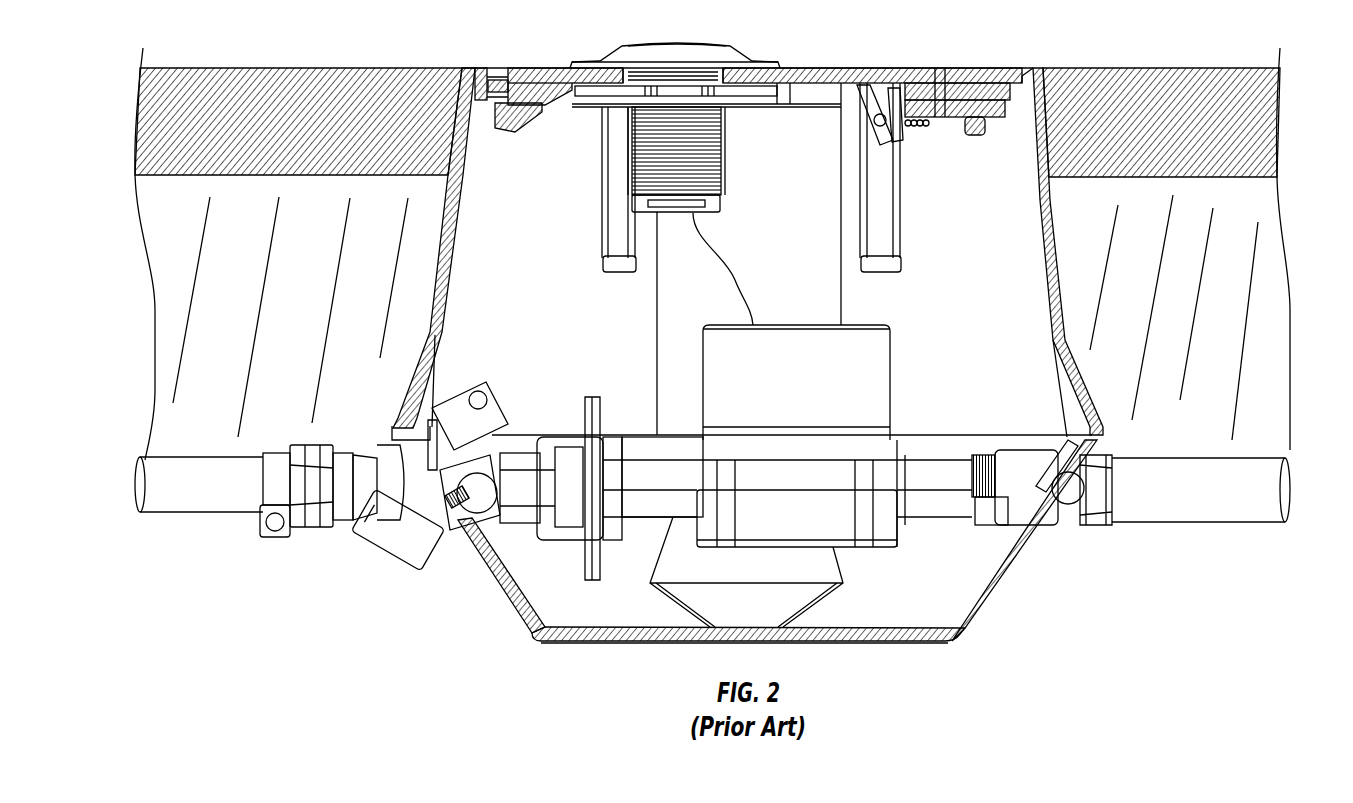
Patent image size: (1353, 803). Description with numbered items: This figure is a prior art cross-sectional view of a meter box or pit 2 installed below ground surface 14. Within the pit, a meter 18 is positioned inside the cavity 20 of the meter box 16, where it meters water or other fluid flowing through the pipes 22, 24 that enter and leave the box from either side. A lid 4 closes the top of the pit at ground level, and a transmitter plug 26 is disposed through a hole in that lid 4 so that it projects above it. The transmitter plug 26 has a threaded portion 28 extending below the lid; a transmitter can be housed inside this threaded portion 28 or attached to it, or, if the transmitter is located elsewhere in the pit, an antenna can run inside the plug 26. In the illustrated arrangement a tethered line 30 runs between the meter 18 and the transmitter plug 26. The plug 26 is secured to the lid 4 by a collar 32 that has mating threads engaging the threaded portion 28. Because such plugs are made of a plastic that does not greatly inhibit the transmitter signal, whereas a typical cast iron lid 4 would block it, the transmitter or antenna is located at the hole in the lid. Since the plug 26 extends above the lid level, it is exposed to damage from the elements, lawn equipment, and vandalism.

The meter box or pit 2 is at (1078, 34).
The lid 4 is at (877, 70).
The ground surface 14 is at (328, 64).
The meter box 16 is at (1056, 222).
The meter 18 is at (890, 375).
The cavity 20 is at (520, 143).
The pipe 22 is at (213, 470).
The pipe 24 is at (1200, 470).
The transmitter plug 26 is at (733, 32).
The threaded portion 28 is at (722, 150).
The tethered line 30 is at (708, 258).
The collar 32 is at (778, 90).